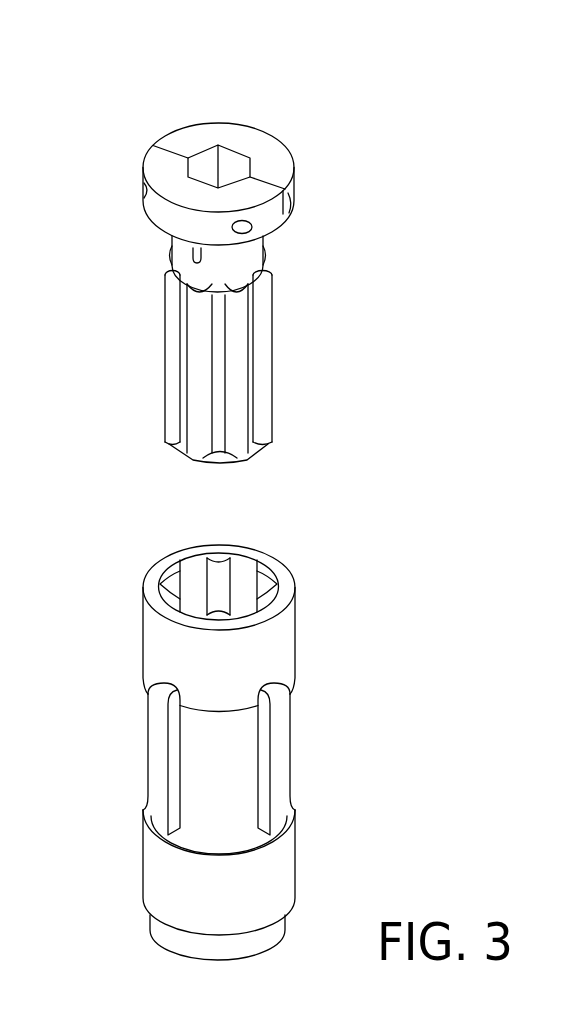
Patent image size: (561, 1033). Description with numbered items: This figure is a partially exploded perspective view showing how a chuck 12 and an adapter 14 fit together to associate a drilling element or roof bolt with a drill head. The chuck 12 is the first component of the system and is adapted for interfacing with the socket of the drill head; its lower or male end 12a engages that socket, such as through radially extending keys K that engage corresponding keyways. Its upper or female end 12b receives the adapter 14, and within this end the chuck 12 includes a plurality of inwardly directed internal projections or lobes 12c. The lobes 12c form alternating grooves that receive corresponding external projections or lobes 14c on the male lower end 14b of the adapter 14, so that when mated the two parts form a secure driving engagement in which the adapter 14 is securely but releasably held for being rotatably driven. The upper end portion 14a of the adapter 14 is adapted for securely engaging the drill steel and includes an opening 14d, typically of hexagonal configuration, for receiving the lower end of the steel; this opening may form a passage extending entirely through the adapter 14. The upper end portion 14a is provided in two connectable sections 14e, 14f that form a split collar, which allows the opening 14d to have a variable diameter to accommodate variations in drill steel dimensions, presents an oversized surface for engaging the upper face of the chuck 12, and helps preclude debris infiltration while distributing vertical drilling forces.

The adapter 14 is at (318, 257).
The upper end portion of the adapter 14a is at (157, 98).
The male lower end of the adapter 14b is at (272, 460).
The external projections or lobes 14c is at (172, 358).
The opening 14d is at (204, 168).
The first connectable section 14e is at (155, 158).
The second connectable section 14f is at (283, 158).
The chuck 12 is at (357, 580).
The lower or male end of the chuck 12a is at (300, 670).
The upper or female end of the chuck 12b is at (157, 540).
The internal projections or lobes 12c is at (243, 568).
The keys K is at (155, 740).